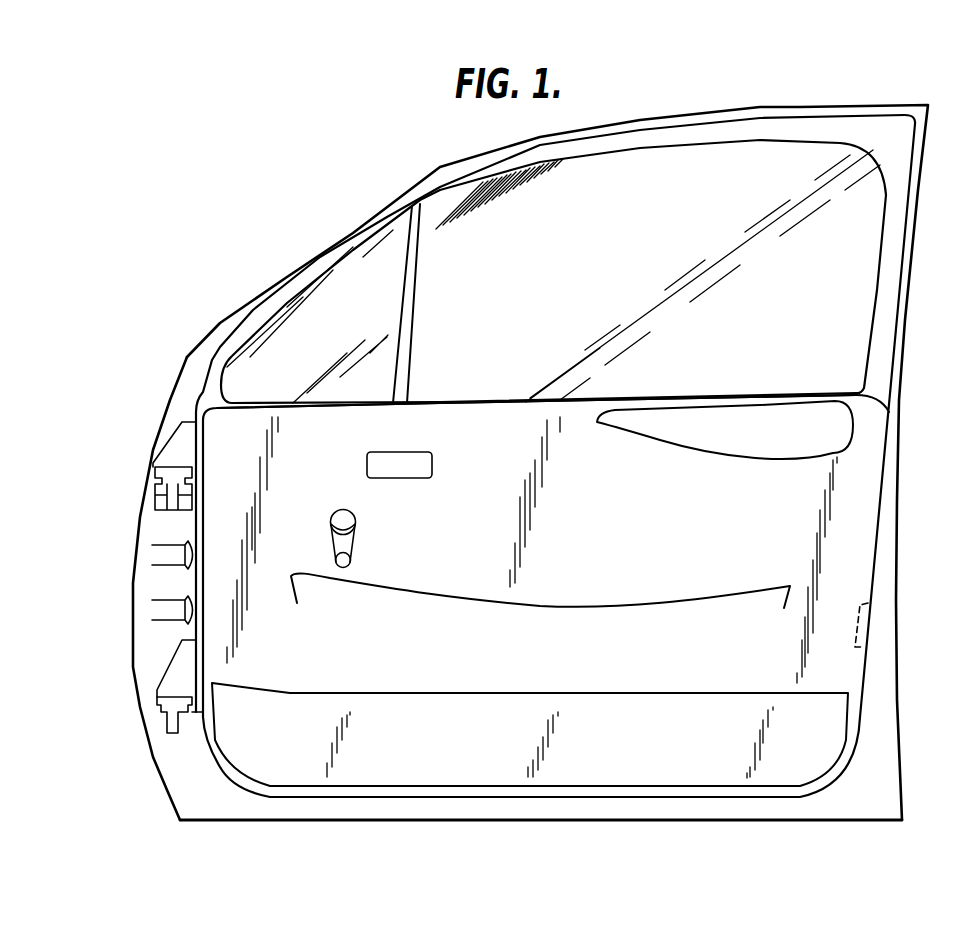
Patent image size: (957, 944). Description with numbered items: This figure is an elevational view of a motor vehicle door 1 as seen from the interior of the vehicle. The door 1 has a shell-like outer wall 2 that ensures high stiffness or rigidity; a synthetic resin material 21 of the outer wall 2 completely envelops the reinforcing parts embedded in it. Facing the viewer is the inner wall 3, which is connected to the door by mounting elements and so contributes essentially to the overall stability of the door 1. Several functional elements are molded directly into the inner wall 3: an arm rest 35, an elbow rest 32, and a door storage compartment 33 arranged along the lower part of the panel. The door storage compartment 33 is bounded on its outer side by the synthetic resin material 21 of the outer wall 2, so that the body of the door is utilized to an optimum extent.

The vehicle door 1 is at (923, 161).
The outer wall 2 is at (876, 806).
The synthetic resin material 21 is at (174, 779).
The inner wall 3 is at (517, 408).
The elbow rest 32 is at (722, 449).
The door storage compartment 33 is at (612, 707).
The arm rest 35 is at (637, 604).